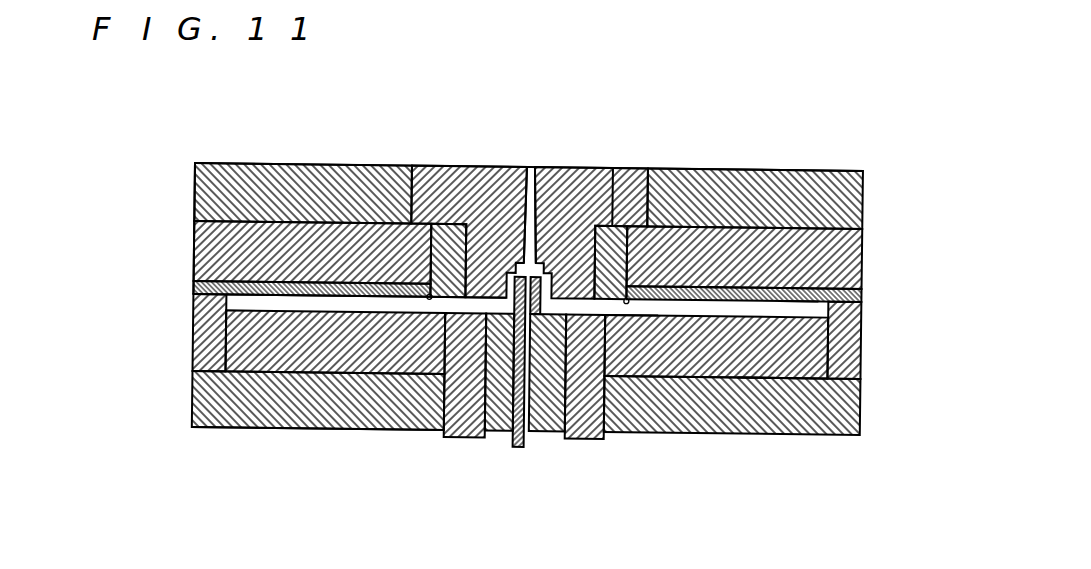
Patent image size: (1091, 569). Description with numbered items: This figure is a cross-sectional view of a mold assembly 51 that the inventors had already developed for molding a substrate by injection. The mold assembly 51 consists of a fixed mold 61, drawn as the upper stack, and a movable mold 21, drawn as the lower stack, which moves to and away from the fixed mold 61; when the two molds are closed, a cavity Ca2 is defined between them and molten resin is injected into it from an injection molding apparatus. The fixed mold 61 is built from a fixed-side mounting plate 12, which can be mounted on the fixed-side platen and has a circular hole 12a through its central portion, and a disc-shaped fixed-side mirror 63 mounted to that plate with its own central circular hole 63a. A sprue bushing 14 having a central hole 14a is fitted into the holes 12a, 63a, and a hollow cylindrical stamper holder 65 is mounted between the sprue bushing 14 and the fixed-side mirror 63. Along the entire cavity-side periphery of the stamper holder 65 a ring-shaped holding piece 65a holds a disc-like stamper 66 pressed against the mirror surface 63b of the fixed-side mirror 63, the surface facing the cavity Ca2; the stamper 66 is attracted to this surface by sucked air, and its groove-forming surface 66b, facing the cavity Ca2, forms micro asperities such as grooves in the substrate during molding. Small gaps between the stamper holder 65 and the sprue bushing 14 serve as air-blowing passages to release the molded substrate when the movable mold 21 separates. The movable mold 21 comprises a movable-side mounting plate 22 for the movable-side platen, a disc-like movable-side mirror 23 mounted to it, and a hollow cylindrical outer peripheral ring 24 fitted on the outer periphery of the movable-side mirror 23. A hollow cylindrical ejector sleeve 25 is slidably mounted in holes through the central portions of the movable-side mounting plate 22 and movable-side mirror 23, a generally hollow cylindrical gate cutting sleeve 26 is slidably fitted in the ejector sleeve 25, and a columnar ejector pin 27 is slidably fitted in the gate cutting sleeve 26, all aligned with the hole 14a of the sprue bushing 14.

The fixed-side mounting plate 12 is at (853, 190).
The hole 12a is at (427, 200).
The sprue bushing 14 is at (563, 168).
The hole 14a is at (528, 163).
The movable mold 21 is at (794, 496).
The movable-side mounting plate 22 is at (853, 417).
The movable-side mirror 23 is at (772, 363).
The outer peripheral ring 24 is at (853, 353).
The ejector sleeve 25 is at (598, 437).
The gate cutting sleeve 26 is at (549, 420).
The ejector pin 27 is at (526, 447).
The mold assembly 51 is at (543, 97).
The fixed mold 61 is at (795, 124).
The fixed-side mirror 63 is at (863, 232).
The hole 63a is at (479, 254).
The mirror surface 63b is at (703, 288).
The stamper holder 65 is at (613, 227).
The holding piece 65a is at (628, 312).
The stamper 66 is at (863, 293).
The groove-forming surface 66b is at (800, 308).
The cavity Ca2 is at (347, 307).